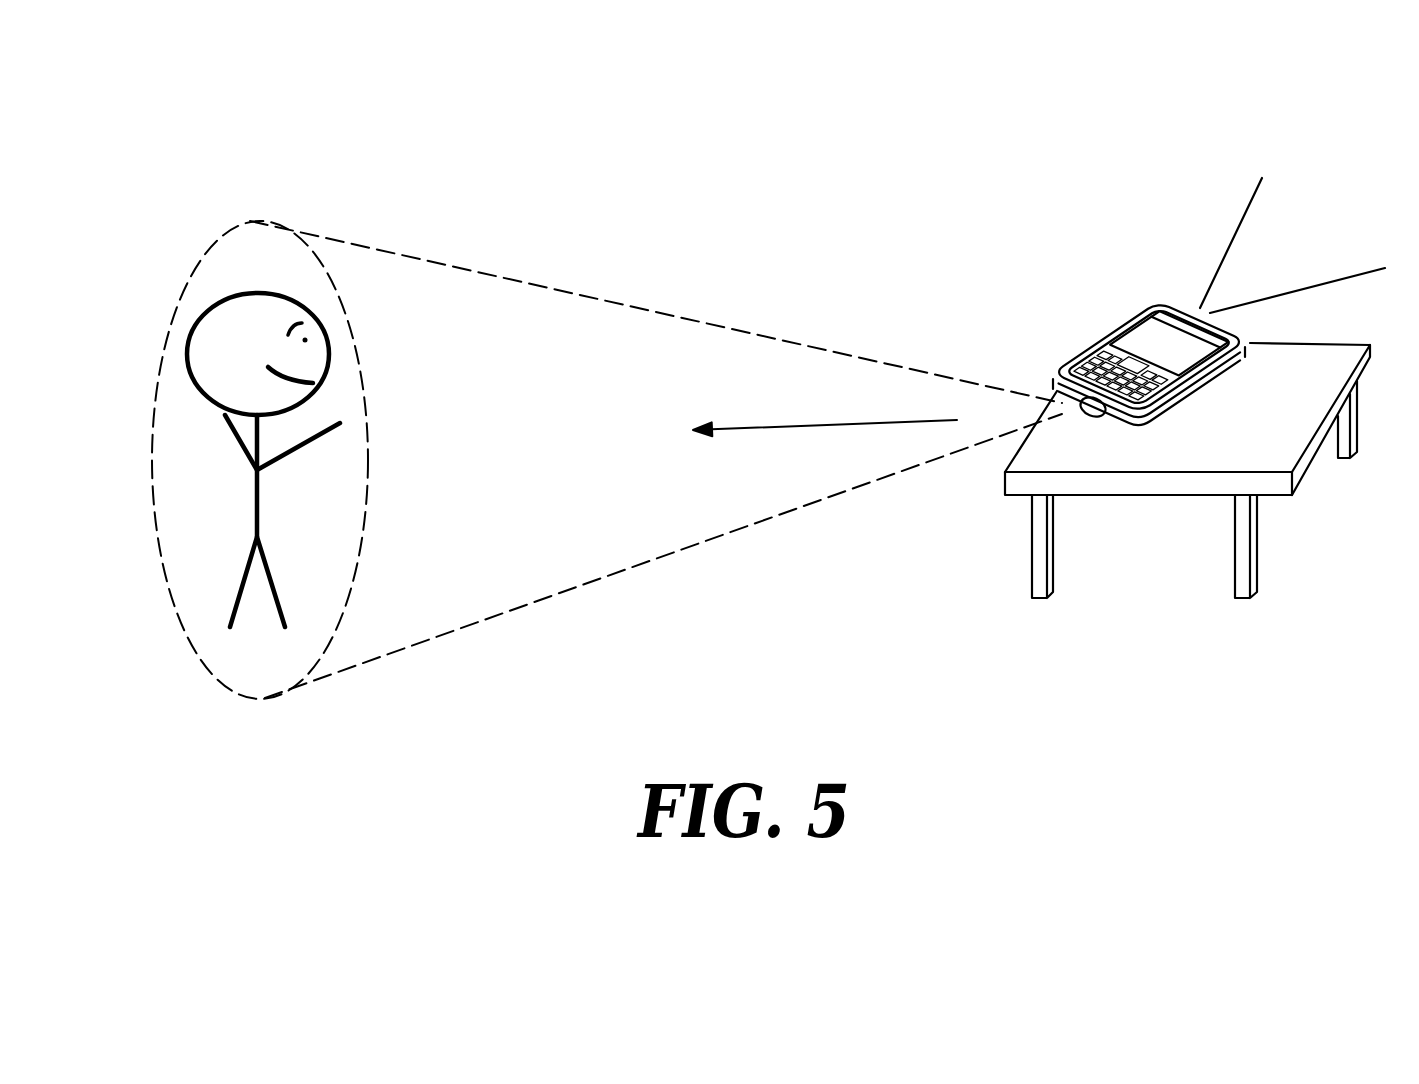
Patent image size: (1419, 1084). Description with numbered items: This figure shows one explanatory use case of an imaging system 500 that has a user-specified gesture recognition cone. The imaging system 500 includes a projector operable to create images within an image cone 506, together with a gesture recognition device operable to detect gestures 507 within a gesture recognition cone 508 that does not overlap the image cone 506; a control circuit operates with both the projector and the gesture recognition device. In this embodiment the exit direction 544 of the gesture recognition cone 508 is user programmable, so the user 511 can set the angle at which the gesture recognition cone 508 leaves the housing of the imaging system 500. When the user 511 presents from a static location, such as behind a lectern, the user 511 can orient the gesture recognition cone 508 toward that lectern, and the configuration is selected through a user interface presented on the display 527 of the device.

The imaging system 500 is at (1084, 324).
The image cone 506 is at (1222, 257).
The gestures 507 is at (322, 473).
The gesture recognition cone 508 is at (480, 272).
The user 511 is at (184, 343).
The display 527 is at (1195, 356).
The exit direction 544 is at (820, 427).